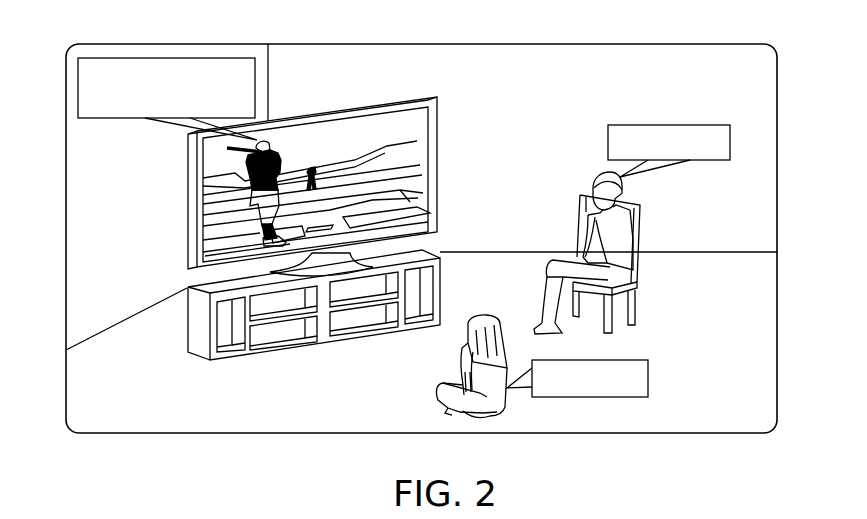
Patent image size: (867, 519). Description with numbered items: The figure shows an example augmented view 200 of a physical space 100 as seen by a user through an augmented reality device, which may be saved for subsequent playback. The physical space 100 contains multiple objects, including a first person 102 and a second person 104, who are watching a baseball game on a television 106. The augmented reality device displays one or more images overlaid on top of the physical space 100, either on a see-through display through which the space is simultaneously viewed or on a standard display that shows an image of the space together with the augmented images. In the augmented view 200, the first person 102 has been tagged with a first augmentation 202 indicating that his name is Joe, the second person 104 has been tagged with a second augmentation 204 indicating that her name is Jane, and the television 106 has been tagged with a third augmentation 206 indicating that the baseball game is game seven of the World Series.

The augmented view 200 is at (720, 43).
The physical space 100 is at (647, 91).
The television 106 is at (413, 98).
The third augmentation 206 is at (254, 92).
The first augmentation 202 is at (705, 123).
The first person 102 is at (618, 200).
The second person 104 is at (487, 313).
The second augmentation 204 is at (632, 360).